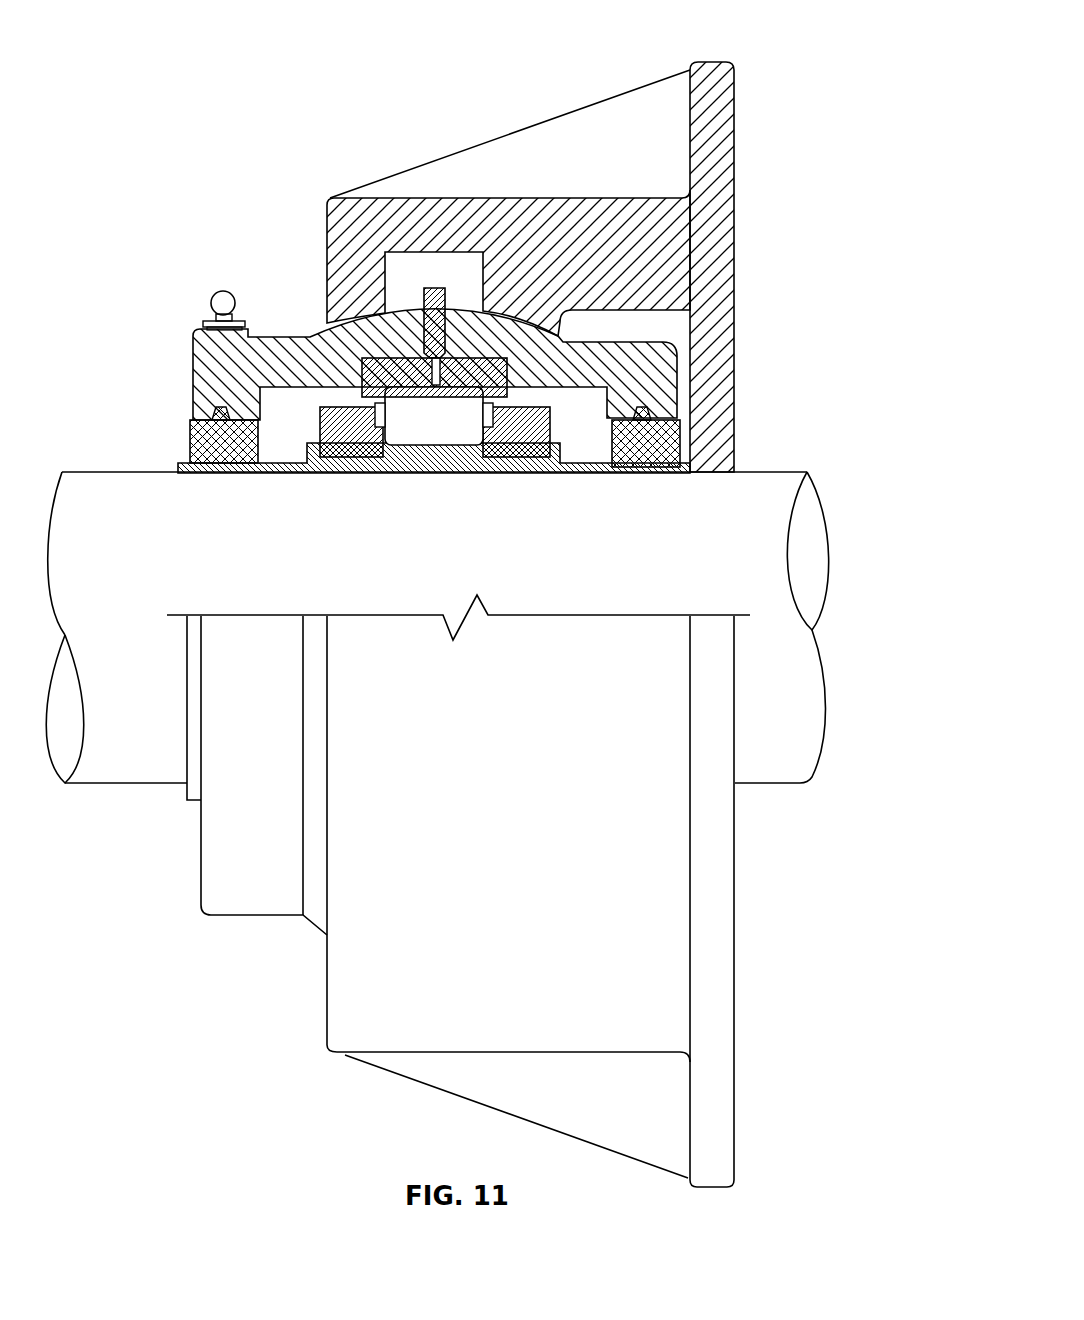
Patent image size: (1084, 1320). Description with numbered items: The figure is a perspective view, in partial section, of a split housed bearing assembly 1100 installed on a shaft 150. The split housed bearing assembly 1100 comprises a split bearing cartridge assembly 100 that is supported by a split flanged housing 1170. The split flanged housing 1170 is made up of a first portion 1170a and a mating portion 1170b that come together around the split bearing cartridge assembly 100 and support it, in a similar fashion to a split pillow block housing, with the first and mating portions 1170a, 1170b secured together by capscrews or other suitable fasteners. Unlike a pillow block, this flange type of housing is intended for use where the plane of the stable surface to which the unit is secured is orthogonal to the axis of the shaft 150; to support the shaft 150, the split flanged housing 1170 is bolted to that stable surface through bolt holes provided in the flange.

The split housed bearing assembly 1100 is at (209, 222).
The shaft 150 is at (112, 508).
The split bearing cartridge assembly 100 is at (215, 913).
The split flanged housing 1170 is at (812, 608).
The first portion 1170a is at (718, 90).
The mating portion 1170b is at (775, 901).